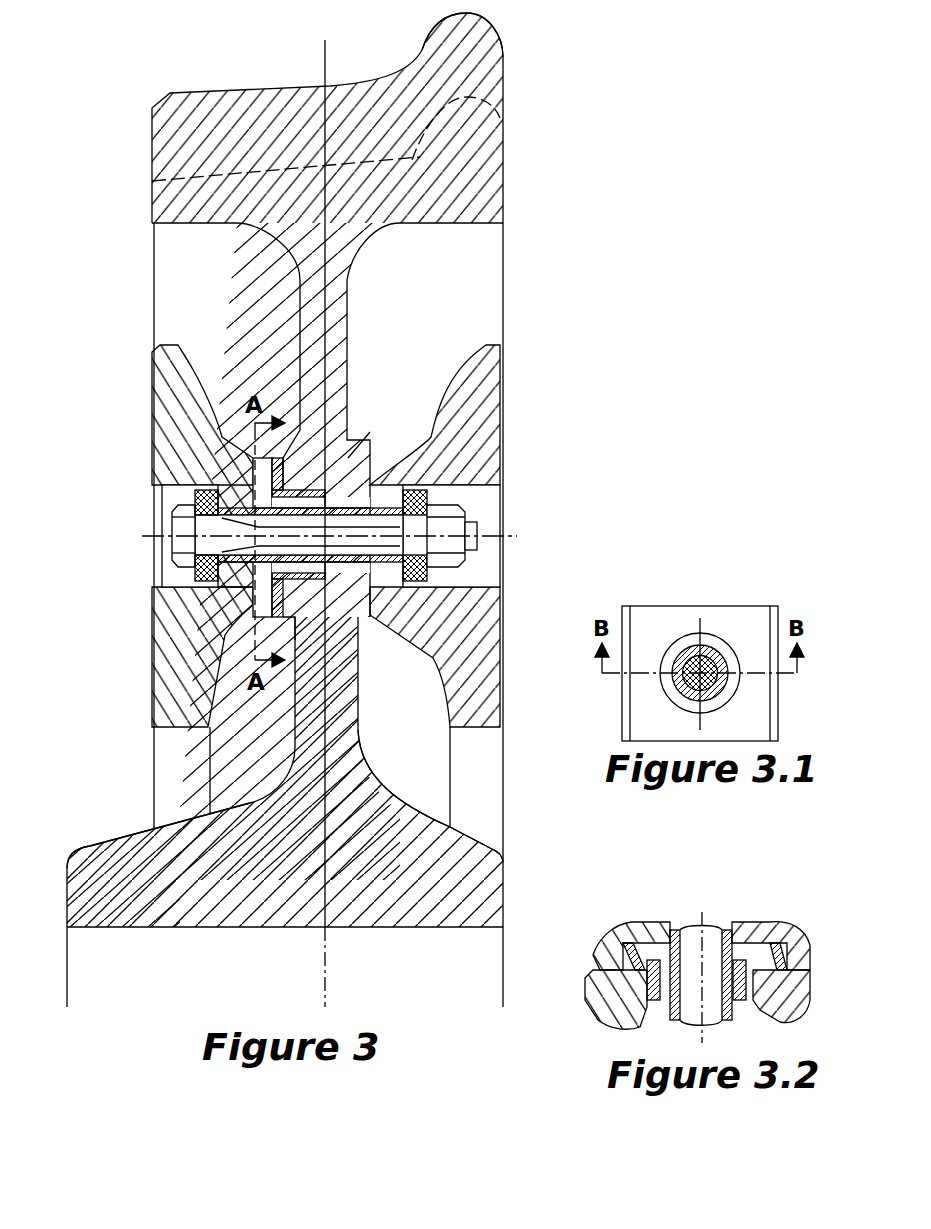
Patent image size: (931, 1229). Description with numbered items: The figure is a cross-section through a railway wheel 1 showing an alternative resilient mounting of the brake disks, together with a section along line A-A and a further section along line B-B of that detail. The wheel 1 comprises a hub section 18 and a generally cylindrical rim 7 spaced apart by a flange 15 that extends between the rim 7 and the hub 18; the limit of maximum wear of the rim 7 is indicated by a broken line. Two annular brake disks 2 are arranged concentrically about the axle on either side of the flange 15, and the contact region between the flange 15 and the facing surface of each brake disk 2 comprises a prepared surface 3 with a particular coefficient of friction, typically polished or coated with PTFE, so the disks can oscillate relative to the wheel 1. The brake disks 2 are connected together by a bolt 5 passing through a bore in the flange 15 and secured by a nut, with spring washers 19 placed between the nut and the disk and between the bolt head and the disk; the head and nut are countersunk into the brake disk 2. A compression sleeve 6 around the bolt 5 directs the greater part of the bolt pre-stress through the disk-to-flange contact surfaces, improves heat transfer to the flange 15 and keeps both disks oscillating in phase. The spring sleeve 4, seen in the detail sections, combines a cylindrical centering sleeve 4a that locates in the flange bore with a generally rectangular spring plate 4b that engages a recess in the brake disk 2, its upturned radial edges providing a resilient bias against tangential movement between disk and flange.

In FIG. 3, the wheel 1 is at (455, 171).
In FIG. 3.2, the wheel 1 is at (593, 985).
In FIG. 3, the brake disk 2 is at (180, 404).
In FIG. 3.2, the brake disk 2 is at (640, 930).
In FIG. 3, the prepared surface 3 is at (383, 466).
In FIG. 3.1, the spring sleeve 4 is at (655, 626).
In FIG. 3, the centering sleeve 4a is at (268, 588).
In FIG. 3.2, the centering sleeve 4a is at (755, 965).
In FIG. 3, the spring plate 4b is at (263, 618).
In FIG. 3.2, the spring plate 4b is at (780, 960).
In FIG. 3, the bolt 5 is at (405, 493).
In FIG. 3.1, the bolt 5 is at (690, 660).
In FIG. 3.2, the bolt 5 is at (695, 935).
In FIG. 3, the compression sleeve 6 is at (357, 588).
In FIG. 3.1, the compression sleeve 6 is at (718, 656).
In FIG. 3.2, the compression sleeve 6 is at (725, 930).
In FIG. 3, the rim 7 is at (475, 44).
In FIG. 3, the flange 15 is at (340, 286).
In FIG. 3, the hub section 18 is at (474, 917).
In FIG. 3, the spring washer 19 is at (348, 532).